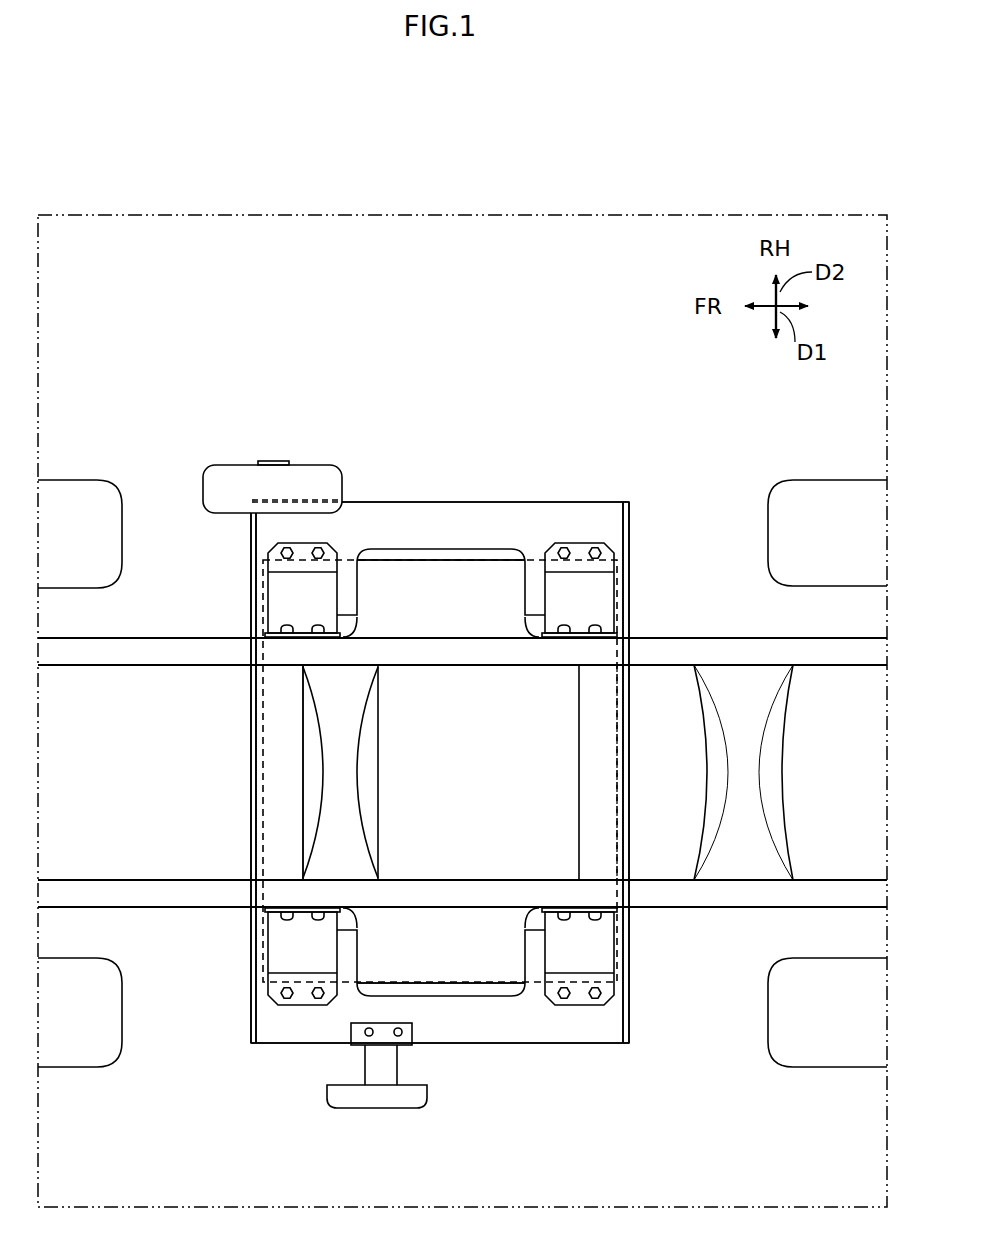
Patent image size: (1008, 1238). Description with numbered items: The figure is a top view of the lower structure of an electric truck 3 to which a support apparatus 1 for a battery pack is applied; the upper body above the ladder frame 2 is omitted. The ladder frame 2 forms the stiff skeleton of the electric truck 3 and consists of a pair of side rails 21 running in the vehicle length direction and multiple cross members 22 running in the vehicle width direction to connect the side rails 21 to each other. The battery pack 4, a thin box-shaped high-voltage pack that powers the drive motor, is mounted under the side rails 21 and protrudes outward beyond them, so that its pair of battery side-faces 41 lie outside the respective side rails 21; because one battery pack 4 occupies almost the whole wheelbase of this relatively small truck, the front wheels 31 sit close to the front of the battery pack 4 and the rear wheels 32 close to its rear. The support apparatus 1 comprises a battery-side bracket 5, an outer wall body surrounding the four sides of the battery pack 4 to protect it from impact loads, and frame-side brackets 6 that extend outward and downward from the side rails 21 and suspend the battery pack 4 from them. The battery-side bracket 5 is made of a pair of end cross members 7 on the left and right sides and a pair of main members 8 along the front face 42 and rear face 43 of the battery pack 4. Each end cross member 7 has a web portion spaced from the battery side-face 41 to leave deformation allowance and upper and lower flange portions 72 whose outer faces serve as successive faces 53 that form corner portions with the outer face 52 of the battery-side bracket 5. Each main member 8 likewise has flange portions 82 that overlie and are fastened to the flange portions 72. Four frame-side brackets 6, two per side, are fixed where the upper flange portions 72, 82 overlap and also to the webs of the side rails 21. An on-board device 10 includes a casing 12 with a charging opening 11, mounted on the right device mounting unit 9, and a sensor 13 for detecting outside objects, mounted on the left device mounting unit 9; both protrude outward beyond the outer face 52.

The support apparatus 1 is at (435, 740).
The ladder frame 2 is at (718, 610).
The electric truck 3 is at (193, 338).
The battery pack 4 is at (439, 786).
The battery-side bracket 5 is at (435, 774).
The frame-side brackets 6 is at (341, 544).
The end cross members 7 is at (441, 774).
The main members 8 is at (250, 737).
The device mounting unit 9 is at (310, 497).
The on-board device 10 is at (297, 787).
The charging opening 11 is at (276, 460).
The casing 12 is at (224, 461).
The sensor 13 is at (385, 1111).
The side rails 21 is at (174, 636).
The cross members 22 is at (302, 775).
The front wheels 31 is at (64, 546).
The rear wheels 32 is at (819, 546).
The battery side-faces 41 is at (432, 548).
The front face 42 is at (262, 810).
The rear face 43 is at (619, 806).
The outer face 52 is at (500, 501).
The successive face 53 is at (451, 773).
The flange portions 72 is at (457, 540).
The flange portions 82 is at (269, 750).